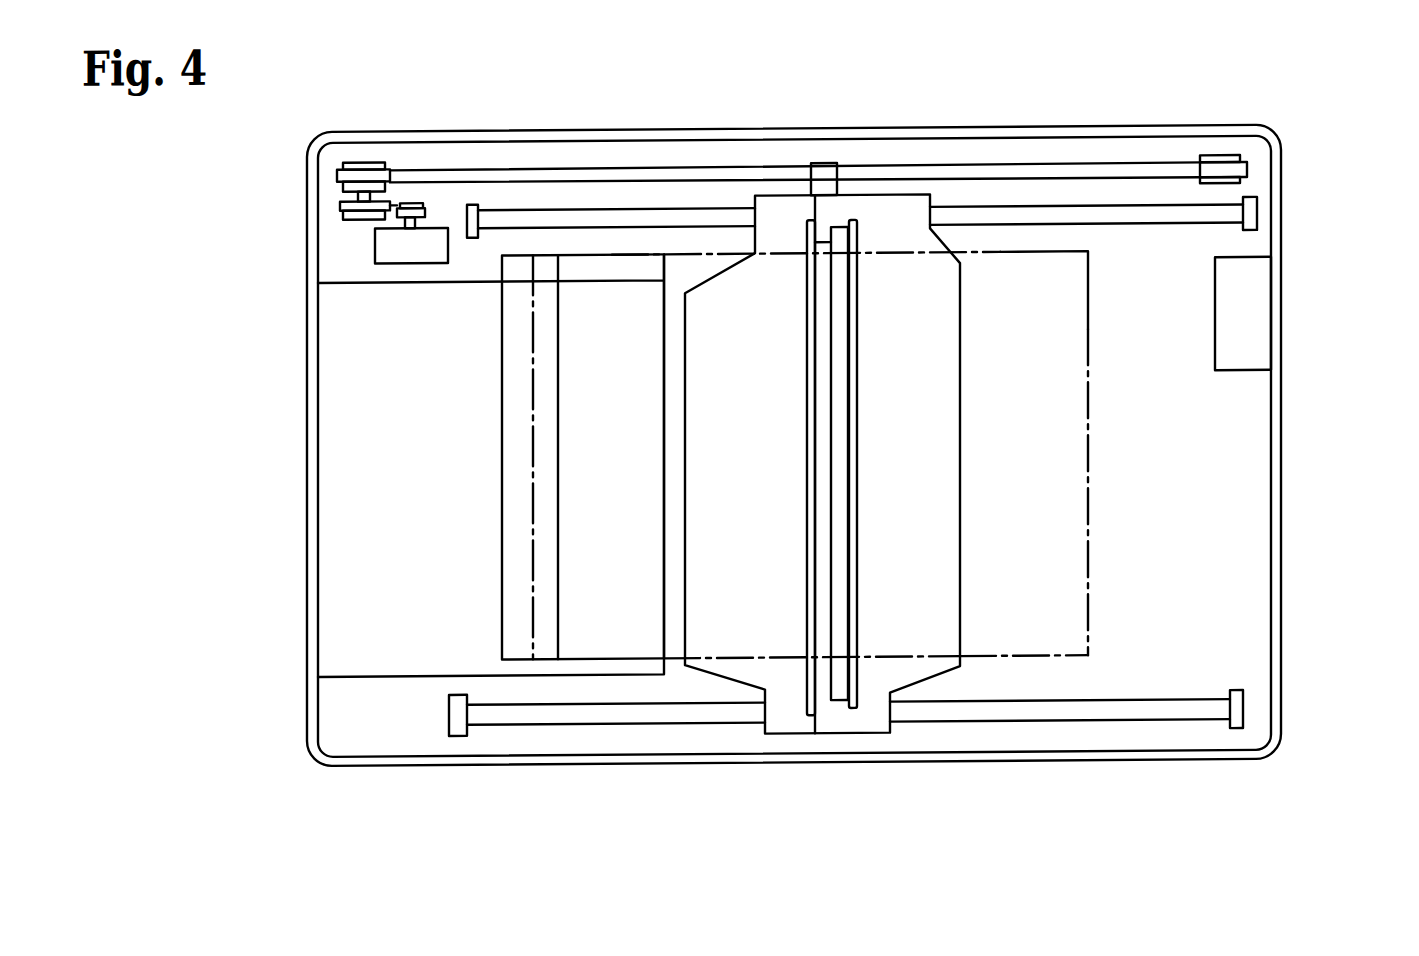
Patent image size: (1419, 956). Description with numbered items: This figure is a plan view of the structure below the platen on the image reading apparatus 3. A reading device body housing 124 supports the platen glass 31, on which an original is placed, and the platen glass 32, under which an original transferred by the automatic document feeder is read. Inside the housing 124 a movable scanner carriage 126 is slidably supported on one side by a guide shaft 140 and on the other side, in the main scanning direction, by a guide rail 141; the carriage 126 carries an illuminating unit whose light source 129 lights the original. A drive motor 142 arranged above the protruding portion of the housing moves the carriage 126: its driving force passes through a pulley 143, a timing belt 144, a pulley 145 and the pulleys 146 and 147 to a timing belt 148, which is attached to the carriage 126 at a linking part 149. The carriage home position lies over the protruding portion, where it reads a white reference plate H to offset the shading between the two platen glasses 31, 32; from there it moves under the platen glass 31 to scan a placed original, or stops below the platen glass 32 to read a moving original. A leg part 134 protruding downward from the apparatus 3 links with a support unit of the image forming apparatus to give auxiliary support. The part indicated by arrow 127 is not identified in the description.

The image reading apparatus 3 is at (1310, 296).
The platen glass 31 is at (1060, 266).
The platen glass 32 is at (513, 579).
The white reference plate H is at (544, 443).
The reading device body housing 124 is at (1280, 410).
The scanner carriage 126 is at (937, 486).
The printer unit 127 is at (1298, 772).
The light source 129 is at (843, 332).
The leg part 134 is at (1257, 345).
The guide shaft 140 is at (1153, 221).
The guide rail 141 is at (1010, 716).
The drive motor 142 is at (429, 264).
The pulley 143 is at (418, 204).
The timing belt 144 is at (390, 208).
The pulley 145 is at (348, 220).
The pulley 146 is at (362, 163).
The pulley 147 is at (1228, 160).
The timing belt 148 is at (692, 181).
The linking part 149 is at (826, 173).